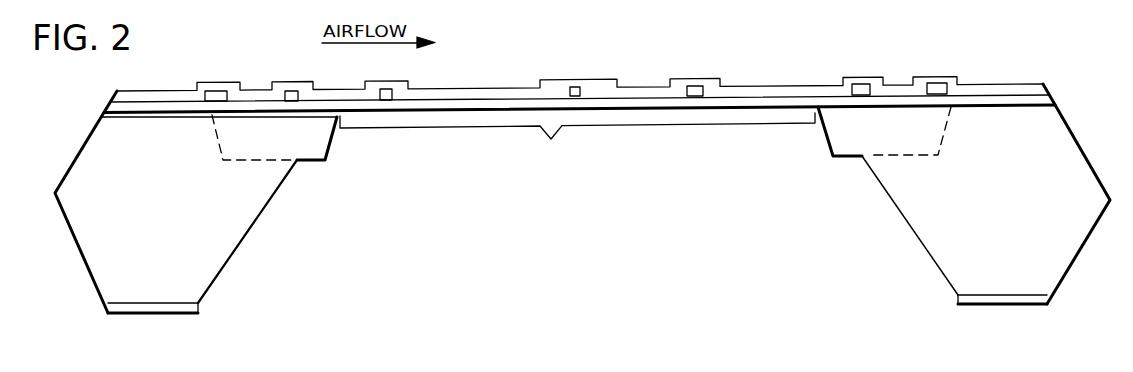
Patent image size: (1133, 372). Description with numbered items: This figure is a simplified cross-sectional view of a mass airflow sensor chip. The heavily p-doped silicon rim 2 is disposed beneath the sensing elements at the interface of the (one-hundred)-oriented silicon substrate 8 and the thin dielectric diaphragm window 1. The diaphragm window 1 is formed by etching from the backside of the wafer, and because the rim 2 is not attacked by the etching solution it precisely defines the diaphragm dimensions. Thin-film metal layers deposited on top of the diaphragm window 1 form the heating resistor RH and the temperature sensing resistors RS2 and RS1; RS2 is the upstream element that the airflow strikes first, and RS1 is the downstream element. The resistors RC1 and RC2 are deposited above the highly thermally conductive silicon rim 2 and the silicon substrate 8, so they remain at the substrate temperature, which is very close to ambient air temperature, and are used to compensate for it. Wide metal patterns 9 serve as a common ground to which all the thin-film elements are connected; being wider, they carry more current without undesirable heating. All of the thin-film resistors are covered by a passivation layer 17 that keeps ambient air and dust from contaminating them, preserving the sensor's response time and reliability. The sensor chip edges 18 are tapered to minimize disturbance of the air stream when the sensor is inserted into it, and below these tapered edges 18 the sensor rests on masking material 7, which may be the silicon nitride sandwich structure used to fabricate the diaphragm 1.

The dielectric diaphragm window 1 is at (577, 138).
The heavily p-doped silicon rim 2 is at (313, 147).
The masking material 7 is at (190, 313).
The silicon substrate 8 is at (215, 270).
The common ground metal patterns 9 is at (208, 90).
The passivation layer 17 is at (758, 85).
The sensor chip edges 18 is at (91, 133).
The ambient temperature sensing resistor RC1 is at (286, 90).
The ambient temperature sensing resistor RC2 is at (868, 83).
The thin-film heating resistor RH is at (580, 88).
The downstream temperature sensing resistor RS1 is at (695, 86).
The upstream temperature sensing resistor RS2 is at (386, 88).